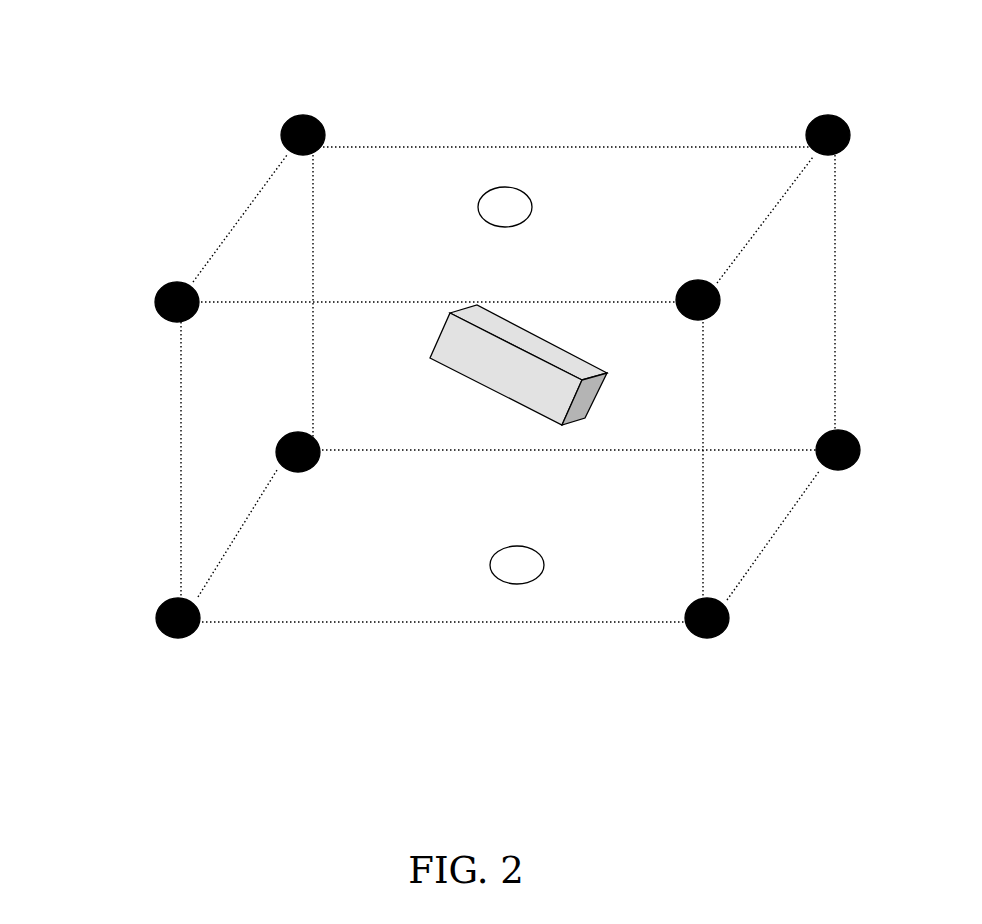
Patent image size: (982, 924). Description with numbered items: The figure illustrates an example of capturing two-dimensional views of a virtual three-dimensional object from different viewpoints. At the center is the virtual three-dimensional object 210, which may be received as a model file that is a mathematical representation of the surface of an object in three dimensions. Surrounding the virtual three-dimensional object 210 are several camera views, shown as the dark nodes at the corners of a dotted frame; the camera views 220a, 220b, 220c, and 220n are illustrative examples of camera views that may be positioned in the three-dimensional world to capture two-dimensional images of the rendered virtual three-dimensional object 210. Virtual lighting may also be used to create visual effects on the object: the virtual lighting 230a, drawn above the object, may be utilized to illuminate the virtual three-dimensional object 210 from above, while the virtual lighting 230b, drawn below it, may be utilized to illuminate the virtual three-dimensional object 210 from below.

The virtual 3D object 210 is at (460, 382).
The camera view 220a is at (165, 280).
The camera view 220b is at (175, 640).
The camera view 220c is at (303, 113).
The camera view 220n is at (828, 112).
The virtual lighting 230a is at (514, 176).
The virtual lighting 230b is at (520, 592).